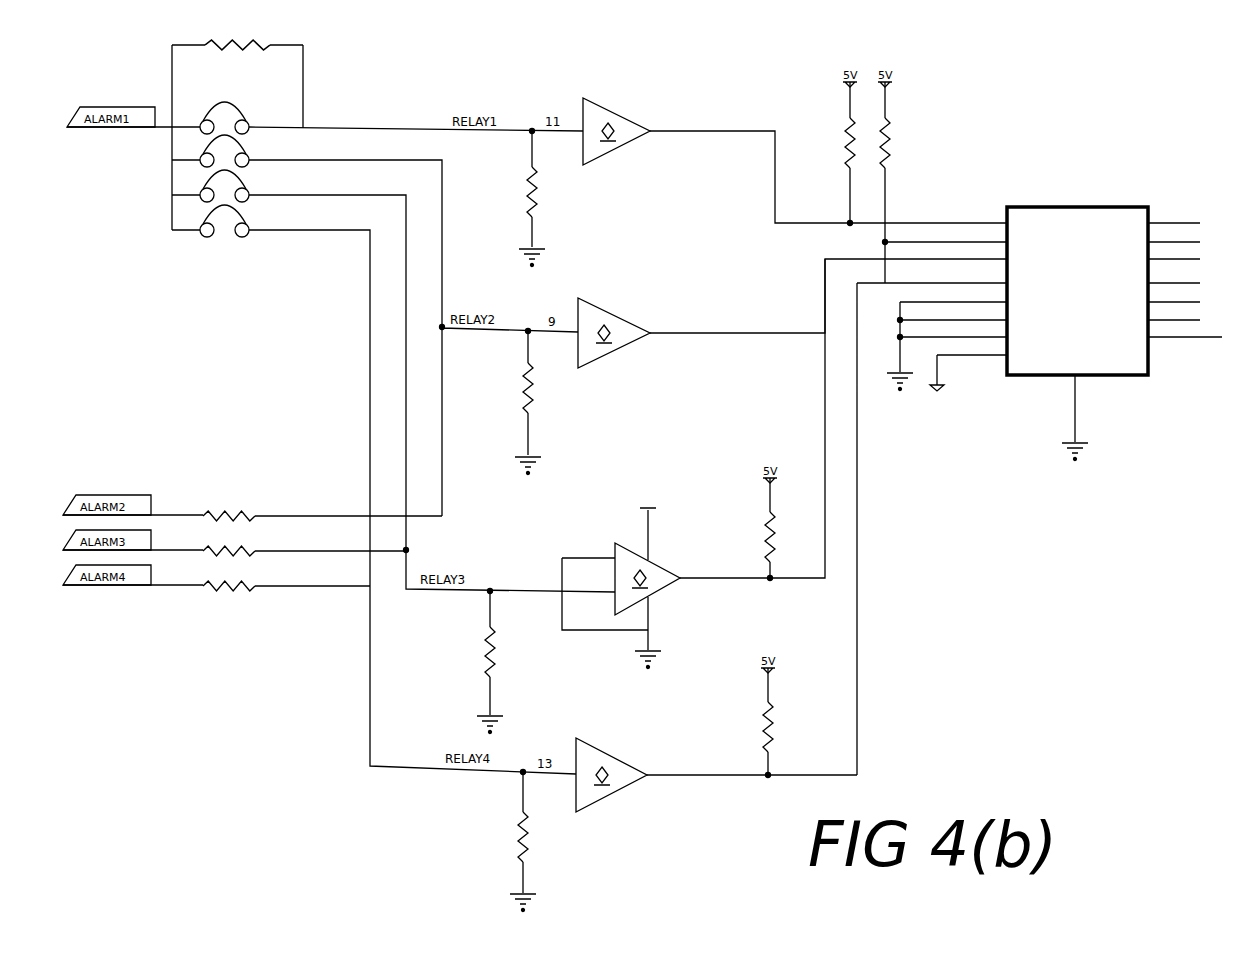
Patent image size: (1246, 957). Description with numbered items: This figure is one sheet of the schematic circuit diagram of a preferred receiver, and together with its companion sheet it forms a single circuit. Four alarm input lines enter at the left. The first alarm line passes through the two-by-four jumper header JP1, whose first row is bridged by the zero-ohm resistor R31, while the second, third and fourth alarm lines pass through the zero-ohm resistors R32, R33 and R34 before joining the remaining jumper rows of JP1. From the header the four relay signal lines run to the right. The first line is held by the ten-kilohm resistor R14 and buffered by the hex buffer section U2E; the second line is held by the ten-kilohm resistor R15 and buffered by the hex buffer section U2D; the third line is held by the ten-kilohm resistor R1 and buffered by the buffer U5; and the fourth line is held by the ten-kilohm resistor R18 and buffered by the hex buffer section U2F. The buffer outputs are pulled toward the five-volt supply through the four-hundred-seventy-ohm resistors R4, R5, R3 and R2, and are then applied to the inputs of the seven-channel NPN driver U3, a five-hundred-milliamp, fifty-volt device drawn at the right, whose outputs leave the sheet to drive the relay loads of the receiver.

The zero-ohm resistor R31 is at (237, 47).
The jumper header JP1 is at (233, 150).
The ten-kilohm resistor R14 is at (545, 199).
The hex buffer section U2E is at (795, 160).
The ten-kilohm resistor R15 is at (542, 403).
The hex buffer section U2D is at (792, 330).
The four-hundred-seventy-ohm resistor R4 is at (837, 147).
The four-hundred-seventy-ohm resistor R5 is at (900, 176).
The seven-channel NPN driver U3 is at (1039, 459).
The buffer IC U5 is at (693, 464).
The four-hundred-seventy-ohm resistor R3 is at (781, 521).
The ten-kilohm resistor R1 is at (495, 662).
The hex buffer section U2F is at (716, 791).
The ten-kilohm resistor R18 is at (531, 842).
The four-hundred-seventy-ohm resistor R2 is at (758, 715).
The zero-ohm resistor R32 is at (322, 508).
The zero-ohm resistor R33 is at (304, 543).
The zero-ohm resistor R34 is at (286, 578).